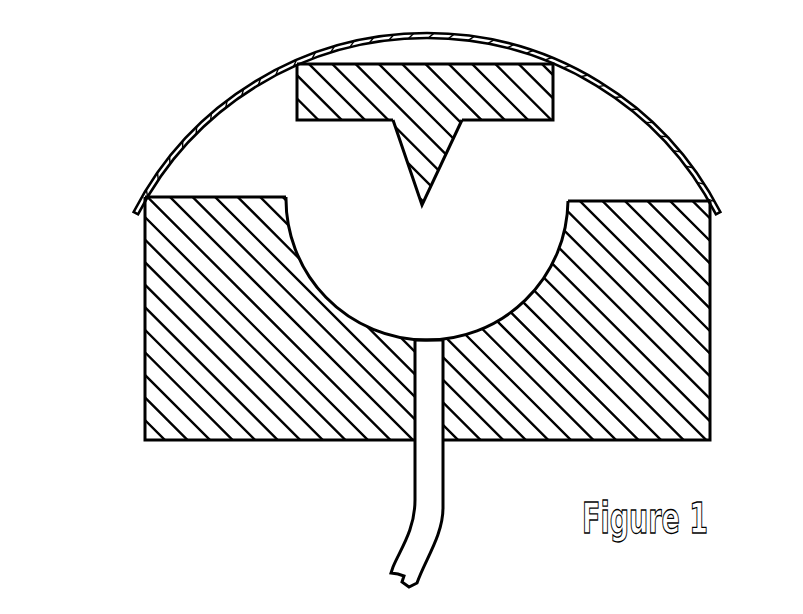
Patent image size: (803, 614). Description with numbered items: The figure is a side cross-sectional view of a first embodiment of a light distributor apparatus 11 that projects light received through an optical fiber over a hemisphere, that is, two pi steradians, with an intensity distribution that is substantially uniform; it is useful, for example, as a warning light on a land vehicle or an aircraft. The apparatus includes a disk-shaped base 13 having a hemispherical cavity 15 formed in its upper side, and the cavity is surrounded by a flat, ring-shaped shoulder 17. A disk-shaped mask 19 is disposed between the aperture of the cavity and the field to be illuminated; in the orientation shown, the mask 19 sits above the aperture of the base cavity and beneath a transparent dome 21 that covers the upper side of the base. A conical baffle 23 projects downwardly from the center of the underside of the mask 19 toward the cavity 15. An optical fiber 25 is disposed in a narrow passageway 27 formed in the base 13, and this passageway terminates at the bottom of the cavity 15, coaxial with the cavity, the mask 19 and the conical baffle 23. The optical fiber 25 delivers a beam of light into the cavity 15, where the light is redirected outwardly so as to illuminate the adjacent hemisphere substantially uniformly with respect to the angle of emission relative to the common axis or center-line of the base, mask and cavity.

The light distributor apparatus 11 is at (127, 147).
The disk-shaped base 13 is at (692, 325).
The hemispherical cavity 15 is at (507, 266).
The shoulder 17 is at (662, 202).
The disk-shaped mask 19 is at (549, 83).
The transparent dome 21 is at (636, 108).
The conical baffle 23 is at (408, 165).
The optical fiber 25 is at (436, 512).
The narrow passageway 27 is at (418, 334).